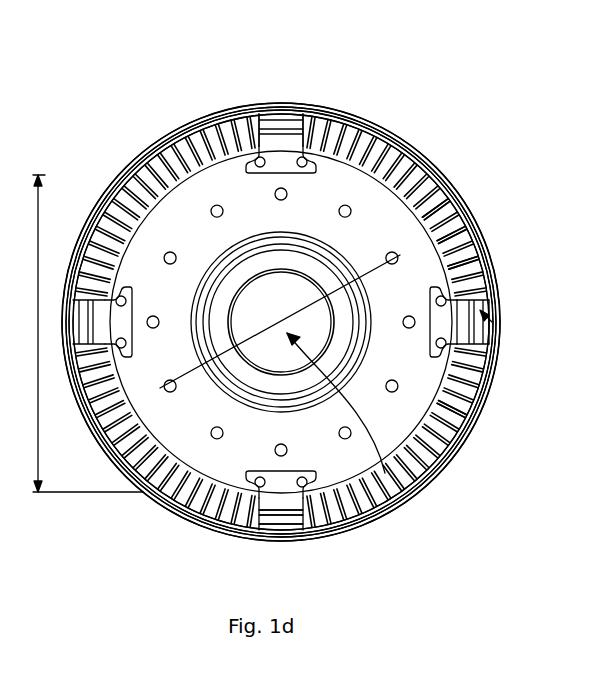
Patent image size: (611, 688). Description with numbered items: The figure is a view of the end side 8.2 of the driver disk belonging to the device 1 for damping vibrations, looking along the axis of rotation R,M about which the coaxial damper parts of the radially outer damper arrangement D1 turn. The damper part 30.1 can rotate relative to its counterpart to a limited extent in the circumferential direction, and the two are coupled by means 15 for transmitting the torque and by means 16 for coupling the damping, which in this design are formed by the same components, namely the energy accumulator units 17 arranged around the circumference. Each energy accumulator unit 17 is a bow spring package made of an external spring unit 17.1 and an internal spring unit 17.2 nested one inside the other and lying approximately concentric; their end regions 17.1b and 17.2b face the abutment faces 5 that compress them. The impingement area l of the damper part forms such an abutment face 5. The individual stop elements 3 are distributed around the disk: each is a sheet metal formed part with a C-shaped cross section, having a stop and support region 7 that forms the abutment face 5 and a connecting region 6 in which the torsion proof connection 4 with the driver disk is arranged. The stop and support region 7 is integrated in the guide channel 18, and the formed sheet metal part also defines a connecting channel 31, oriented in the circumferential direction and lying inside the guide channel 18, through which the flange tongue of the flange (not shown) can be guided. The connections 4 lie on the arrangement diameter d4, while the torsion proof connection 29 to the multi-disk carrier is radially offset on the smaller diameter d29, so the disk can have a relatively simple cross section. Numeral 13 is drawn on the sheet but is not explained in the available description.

The device for damping vibrations 1 is at (148, 114).
The stop element 3 is at (264, 116).
The torsion proof connection 4 is at (302, 116).
The abutment face 5 is at (222, 113).
The connecting region 6 is at (283, 497).
The stop and/or support region 7 is at (275, 522).
The end side of the driver disk 8.2 is at (333, 175).
The hub 13 is at (370, 363).
The means for transmitting the torque 15 is at (503, 322).
The means for coupling the damping 16 is at (499, 278).
The energy accumulator unit 17 is at (324, 322).
The external spring unit 17.1 is at (456, 187).
The internal spring unit 17.2 is at (470, 218).
The end region of the external spring unit 17.1b is at (500, 328).
The end region of the internal spring unit 17.2b is at (529, 352).
The guide channel 18 is at (487, 253).
The torsion proof connection 29 is at (350, 208).
The damper part 30.1 is at (475, 423).
The connecting channel 31 is at (285, 110).
The radially outer damper arrangement D1 is at (131, 167).
The arrangement diameter d4 is at (75, 333).
The diameter d29 is at (265, 331).
The impingement area l is at (70, 262).
The axis of rotation R,M is at (405, 500).